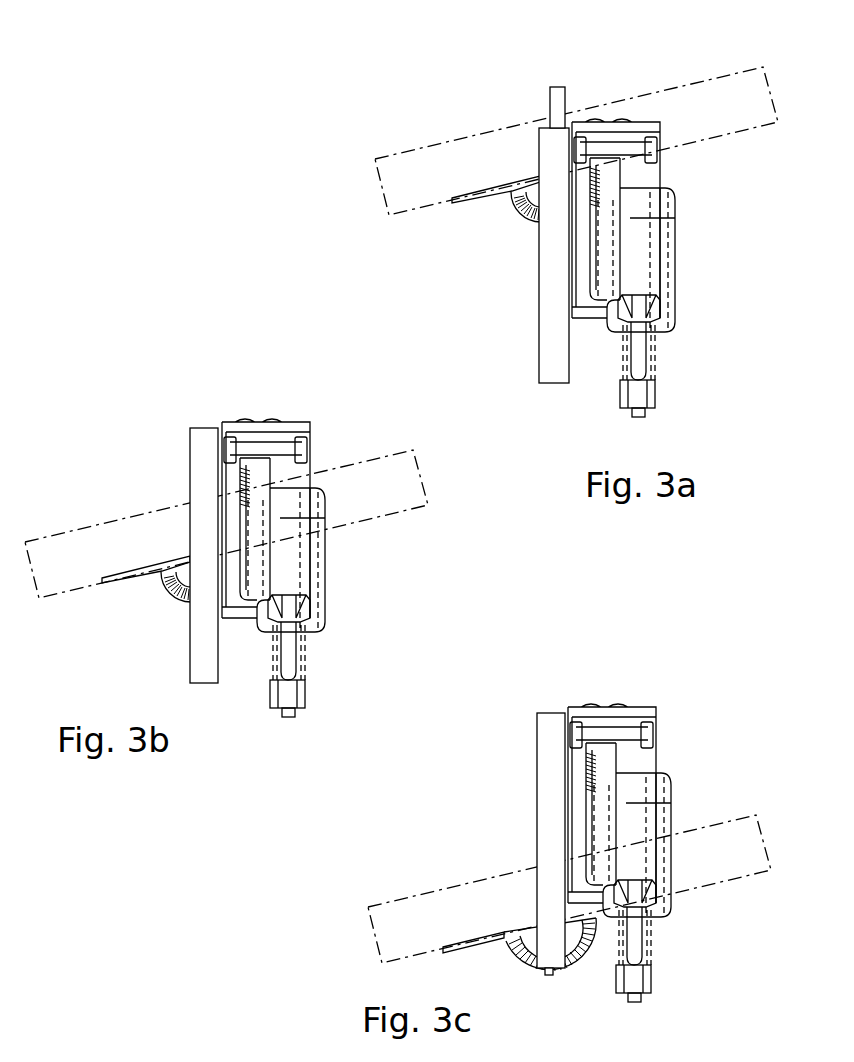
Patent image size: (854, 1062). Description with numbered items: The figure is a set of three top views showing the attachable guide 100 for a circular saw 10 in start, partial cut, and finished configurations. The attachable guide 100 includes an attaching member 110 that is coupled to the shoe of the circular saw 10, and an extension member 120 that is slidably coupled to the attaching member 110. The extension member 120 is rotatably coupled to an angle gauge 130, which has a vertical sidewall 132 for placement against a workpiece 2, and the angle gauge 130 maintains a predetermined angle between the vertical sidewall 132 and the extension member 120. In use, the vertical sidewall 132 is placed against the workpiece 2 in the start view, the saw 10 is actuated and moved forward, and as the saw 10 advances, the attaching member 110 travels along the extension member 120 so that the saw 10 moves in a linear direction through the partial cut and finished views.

In FIG. 3a, the workpiece 2 is at (380, 178).
In FIG. 3b, the workpiece 2 is at (37, 536).
In FIG. 3c, the workpiece 2 is at (372, 928).
In FIG. 3a, the circular saw 10 is at (697, 262).
In FIG. 3b, the circular saw 10 is at (327, 637).
In FIG. 3c, the circular saw 10 is at (690, 782).
In FIG. 3a, the attachable guide 100 is at (488, 245).
In FIG. 3b, the attachable guide 100 is at (144, 530).
In FIG. 3c, the attachable guide 100 is at (501, 848).
In FIG. 3a, the attaching member 110 is at (520, 332).
In FIG. 3b, the attaching member 110 is at (170, 440).
In FIG. 3c, the attaching member 110 is at (530, 732).
In FIG. 3a, the extension member 120 is at (536, 72).
In FIG. 3a, the angle gauge 130 is at (513, 215).
In FIG. 3b, the angle gauge 130 is at (165, 597).
In FIG. 3c, the angle gauge 130 is at (502, 952).
In FIG. 3a, the vertical sidewall 132 is at (478, 190).
In FIG. 3b, the vertical sidewall 132 is at (117, 570).
In FIG. 3c, the vertical sidewall 132 is at (462, 940).